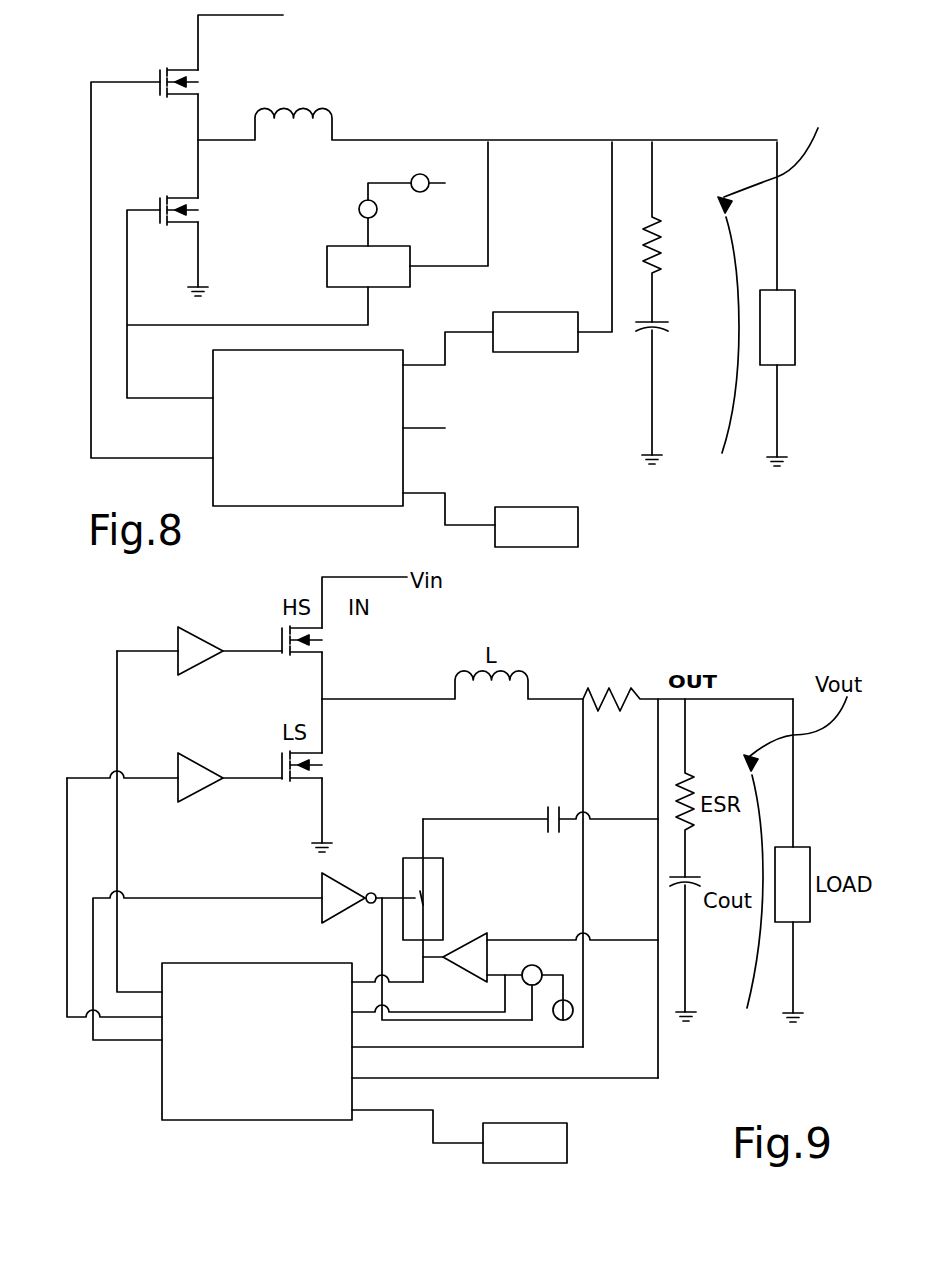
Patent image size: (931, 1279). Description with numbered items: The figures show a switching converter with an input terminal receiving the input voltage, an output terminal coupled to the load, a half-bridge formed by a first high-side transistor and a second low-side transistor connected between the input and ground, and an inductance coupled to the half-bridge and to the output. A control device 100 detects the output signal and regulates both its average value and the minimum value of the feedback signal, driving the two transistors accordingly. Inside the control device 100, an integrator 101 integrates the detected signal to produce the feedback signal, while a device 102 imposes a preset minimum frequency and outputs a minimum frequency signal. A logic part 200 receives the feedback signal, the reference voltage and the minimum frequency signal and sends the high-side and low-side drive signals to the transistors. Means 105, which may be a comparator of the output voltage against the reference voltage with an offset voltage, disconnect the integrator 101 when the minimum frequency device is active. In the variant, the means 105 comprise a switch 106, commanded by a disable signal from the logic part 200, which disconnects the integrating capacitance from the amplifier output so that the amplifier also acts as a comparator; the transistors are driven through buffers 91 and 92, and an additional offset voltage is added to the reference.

In FIG. 8, the control device 100 is at (82, 442).
In FIG. 8, the integrator 101 is at (520, 345).
In FIG. 9, the integrator 101 is at (521, 807).
In FIG. 8, the device for imposing a preset minimum frequency 102 is at (520, 540).
In FIG. 9, the device for imposing a preset minimum frequency 102 is at (509, 1156).
In FIG. 8, the means for disconnecting the integrator 105 is at (352, 279).
In FIG. 9, the means for disconnecting the integrator 105 is at (499, 926).
In FIG. 9, the switch 106 is at (457, 881).
In FIG. 8, the logic part 200 is at (308, 495).
In FIG. 9, the logic part 200 is at (257, 1108).
In FIG. 9, the buffer 91 is at (208, 641).
In FIG. 9, the buffer 92 is at (210, 770).